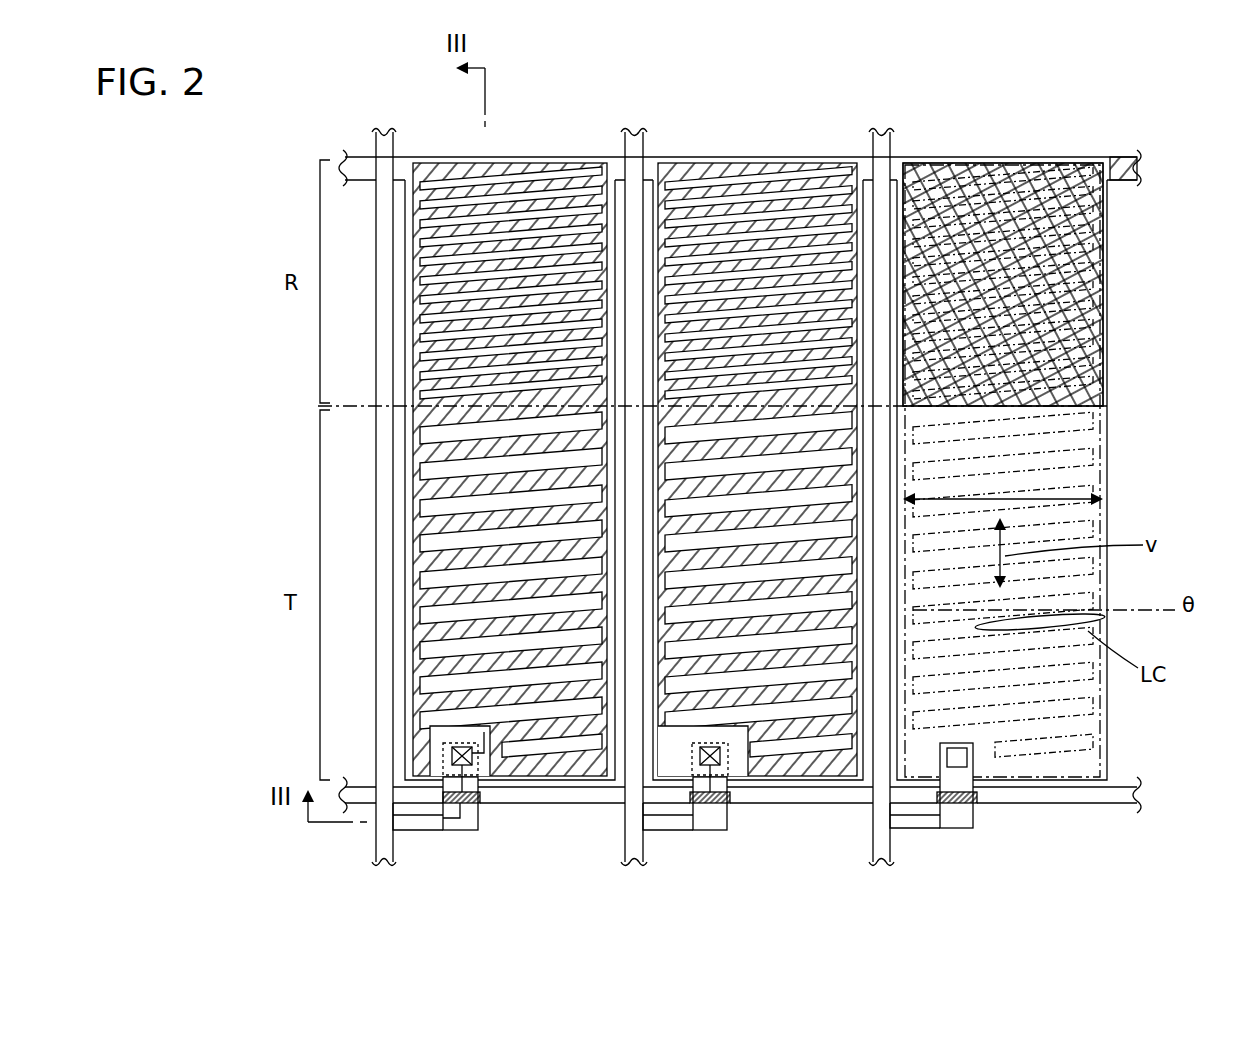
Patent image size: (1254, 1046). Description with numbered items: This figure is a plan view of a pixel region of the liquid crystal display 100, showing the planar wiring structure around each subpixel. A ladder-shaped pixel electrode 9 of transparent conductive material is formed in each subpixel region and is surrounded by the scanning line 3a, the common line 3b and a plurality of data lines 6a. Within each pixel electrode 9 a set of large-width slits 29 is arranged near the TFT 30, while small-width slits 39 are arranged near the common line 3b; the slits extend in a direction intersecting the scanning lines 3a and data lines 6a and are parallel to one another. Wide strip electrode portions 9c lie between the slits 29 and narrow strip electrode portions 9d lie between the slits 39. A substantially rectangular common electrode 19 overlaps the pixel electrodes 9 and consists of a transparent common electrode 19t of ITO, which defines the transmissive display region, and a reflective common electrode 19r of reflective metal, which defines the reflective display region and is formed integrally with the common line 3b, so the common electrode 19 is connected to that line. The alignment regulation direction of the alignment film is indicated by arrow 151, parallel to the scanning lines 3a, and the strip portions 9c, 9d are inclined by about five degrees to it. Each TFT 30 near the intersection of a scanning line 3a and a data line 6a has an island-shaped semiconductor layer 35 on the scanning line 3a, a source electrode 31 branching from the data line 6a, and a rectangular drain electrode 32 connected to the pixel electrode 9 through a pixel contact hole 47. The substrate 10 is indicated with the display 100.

The scanning line 3a is at (830, 805).
The common line 3b is at (347, 150).
The data line 6a is at (395, 140).
The pixel electrode 9 is at (465, 165).
The strip electrode portion 9c is at (438, 556).
The strip electrode portion 9d is at (438, 262).
The active matrix substrate 10 is at (1061, 108).
The liquid crystal display 100 is at (1085, 48).
The common electrode 19 is at (1190, 385).
The reflective common electrode 19r is at (409, 232).
The transparent common electrode 19t is at (410, 501).
The slit 29 is at (438, 633).
The TFT 30 is at (463, 836).
The source electrode 31 is at (472, 831).
The drain electrode 32 is at (480, 776).
The semiconductor layer 35 is at (452, 803).
The slit 39 is at (438, 333).
The pixel contact hole 47 is at (474, 764).
The alignment regulation direction 151 is at (1085, 498).